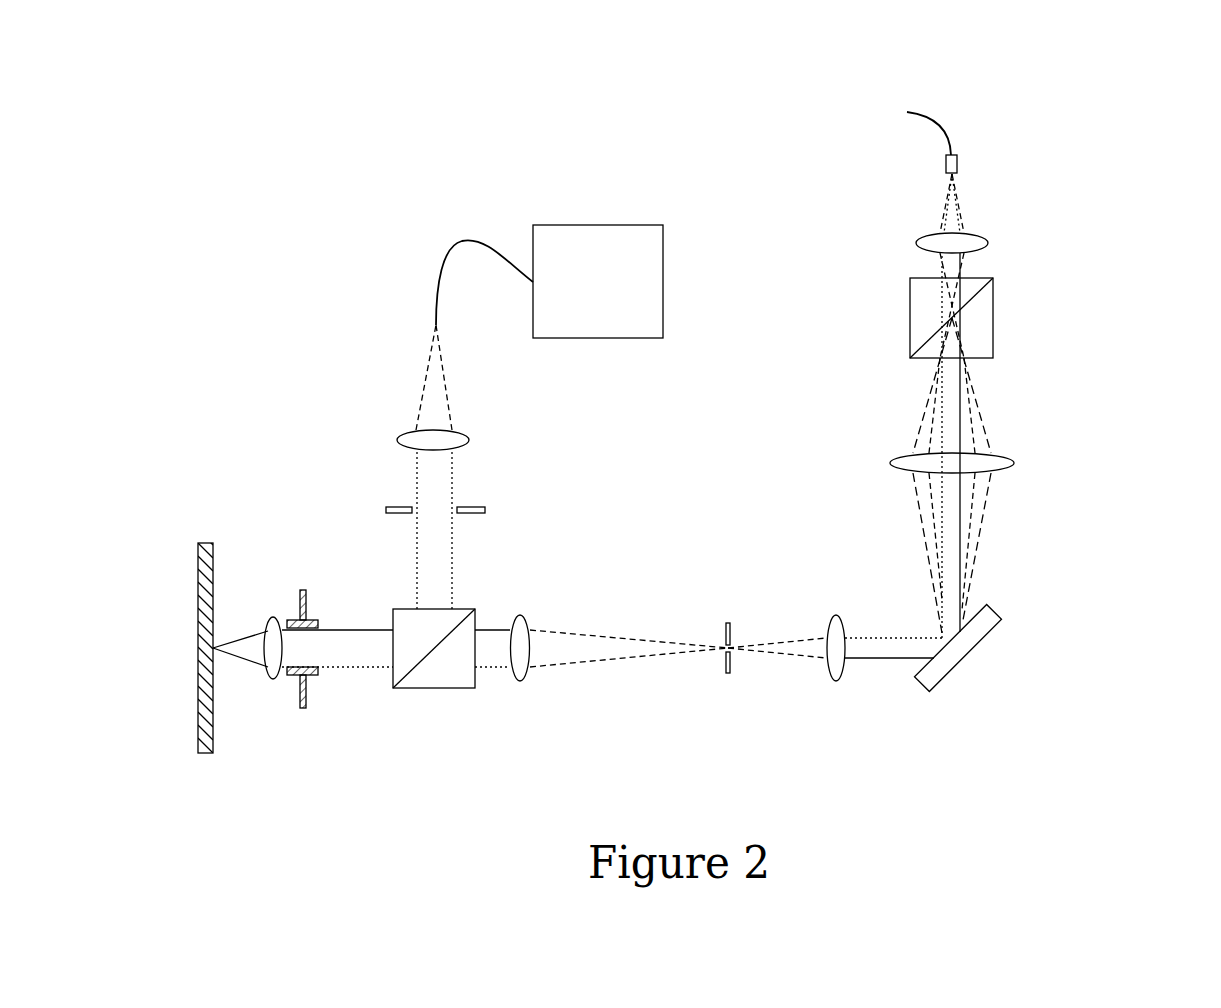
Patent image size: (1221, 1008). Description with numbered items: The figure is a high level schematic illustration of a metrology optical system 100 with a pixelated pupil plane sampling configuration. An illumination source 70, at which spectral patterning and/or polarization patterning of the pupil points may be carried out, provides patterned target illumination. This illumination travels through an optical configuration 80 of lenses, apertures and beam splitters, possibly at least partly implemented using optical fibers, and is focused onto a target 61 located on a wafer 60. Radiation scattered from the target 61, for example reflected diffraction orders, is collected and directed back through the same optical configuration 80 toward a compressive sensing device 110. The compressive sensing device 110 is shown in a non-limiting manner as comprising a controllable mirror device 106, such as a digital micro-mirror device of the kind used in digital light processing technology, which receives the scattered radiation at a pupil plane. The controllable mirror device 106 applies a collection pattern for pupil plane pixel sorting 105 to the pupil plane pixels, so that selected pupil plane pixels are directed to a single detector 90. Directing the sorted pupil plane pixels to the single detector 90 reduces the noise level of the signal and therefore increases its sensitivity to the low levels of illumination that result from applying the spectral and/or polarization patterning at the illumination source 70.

The metrology optical system 100 is at (196, 75).
The compressive sensing device 110 is at (1105, 88).
The wafer 60 is at (208, 755).
The target 61 is at (224, 662).
The optical configuration 80 is at (445, 726).
The illumination source 70 is at (663, 260).
The single detector 90 is at (958, 165).
The collection pattern for pupil plane pixel sorting 105 is at (1043, 455).
The controllable mirror device 106 is at (976, 670).